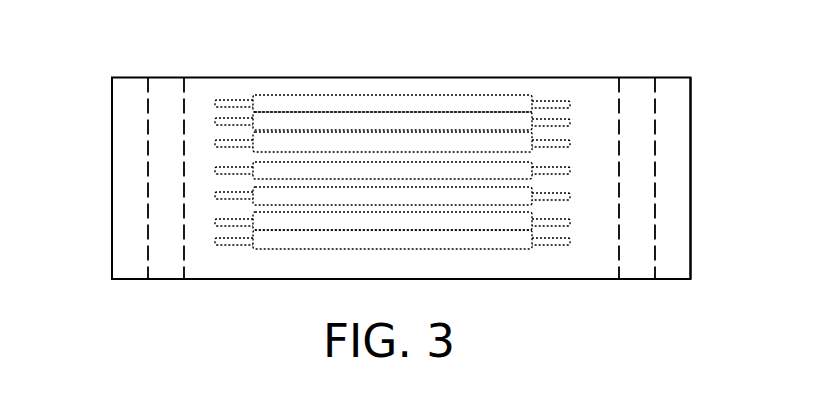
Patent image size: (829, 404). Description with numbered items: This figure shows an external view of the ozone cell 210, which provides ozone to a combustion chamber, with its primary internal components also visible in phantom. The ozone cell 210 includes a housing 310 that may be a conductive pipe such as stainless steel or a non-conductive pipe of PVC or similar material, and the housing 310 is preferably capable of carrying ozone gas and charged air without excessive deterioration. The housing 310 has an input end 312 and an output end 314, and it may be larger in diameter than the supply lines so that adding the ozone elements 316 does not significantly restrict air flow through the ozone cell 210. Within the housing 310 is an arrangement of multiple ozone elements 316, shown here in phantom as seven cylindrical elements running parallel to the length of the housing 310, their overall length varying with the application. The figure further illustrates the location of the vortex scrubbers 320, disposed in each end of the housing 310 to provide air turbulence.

The ozone cell 210 is at (456, 62).
The housing 310 is at (316, 78).
The input end 312 is at (112, 108).
The output end 314 is at (691, 100).
The ozone elements 316 is at (518, 95).
The vortex scrubbers 320 is at (165, 279).